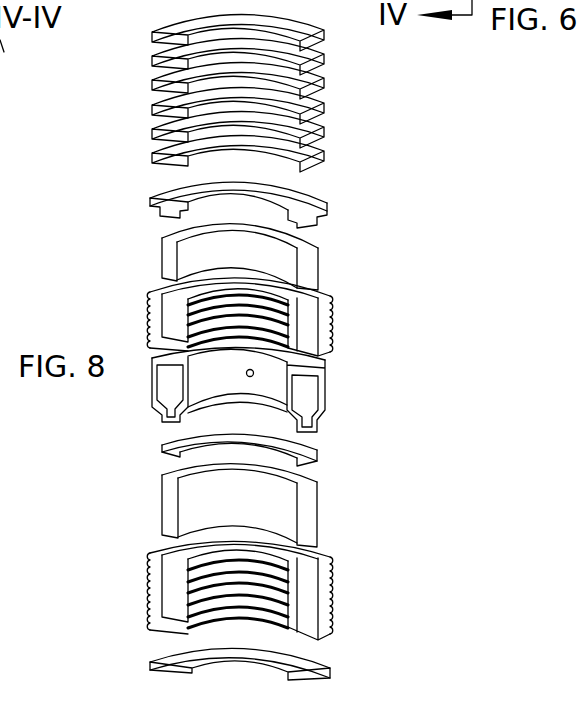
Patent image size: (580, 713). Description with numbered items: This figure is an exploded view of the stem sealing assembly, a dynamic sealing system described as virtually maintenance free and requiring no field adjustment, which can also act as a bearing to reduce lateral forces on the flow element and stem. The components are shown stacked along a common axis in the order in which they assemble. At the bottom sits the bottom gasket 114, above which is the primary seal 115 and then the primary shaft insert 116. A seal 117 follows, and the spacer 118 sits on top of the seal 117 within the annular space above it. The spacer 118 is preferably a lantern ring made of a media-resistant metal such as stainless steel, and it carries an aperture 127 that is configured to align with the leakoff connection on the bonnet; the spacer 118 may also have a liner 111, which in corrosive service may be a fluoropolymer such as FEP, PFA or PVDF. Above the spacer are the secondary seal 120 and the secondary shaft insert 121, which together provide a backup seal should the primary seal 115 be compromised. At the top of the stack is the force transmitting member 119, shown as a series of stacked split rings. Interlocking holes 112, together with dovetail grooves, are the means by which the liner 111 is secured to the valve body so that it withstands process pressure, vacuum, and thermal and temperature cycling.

The liner 111 is at (306, 355).
The interlocking holes 112 is at (310, 213).
The bottom gasket 114 is at (312, 665).
The primary seal 115 is at (322, 597).
The primary shaft insert 116 is at (303, 515).
The seal 117 is at (305, 450).
The spacer 118 is at (303, 397).
The force transmitting member 119 is at (140, 30).
The secondary seal 120 is at (318, 320).
The secondary shaft insert 121 is at (310, 268).
The aperture 127 is at (262, 368).